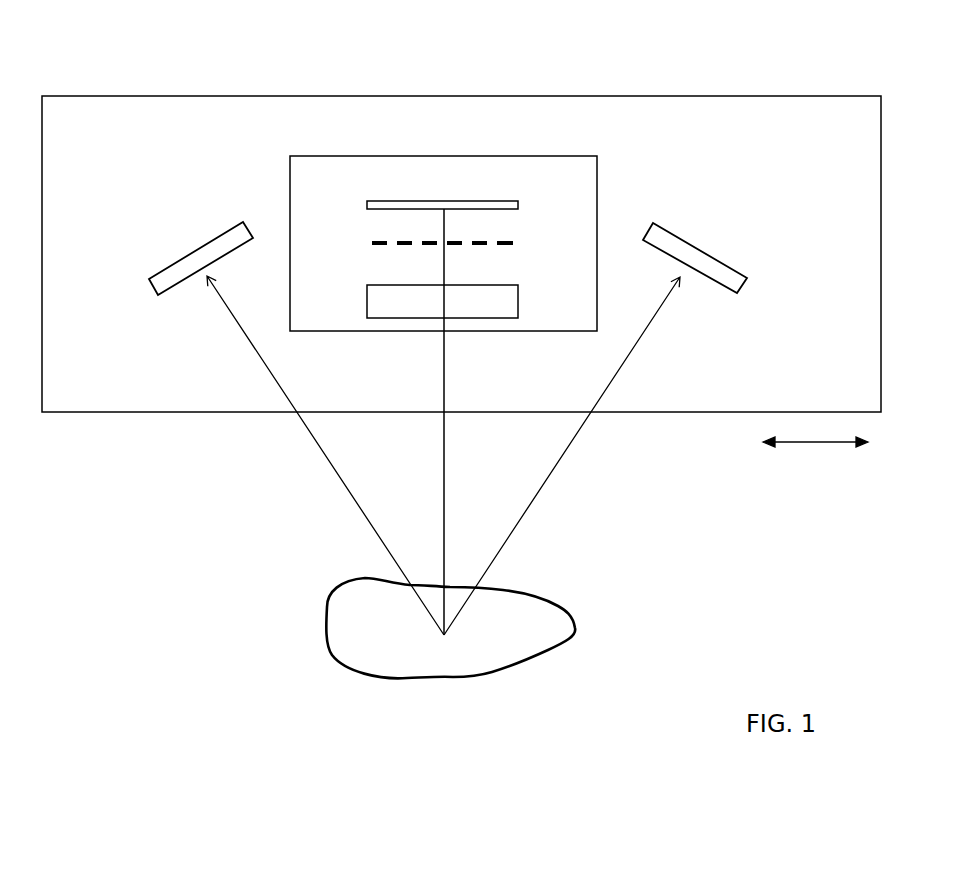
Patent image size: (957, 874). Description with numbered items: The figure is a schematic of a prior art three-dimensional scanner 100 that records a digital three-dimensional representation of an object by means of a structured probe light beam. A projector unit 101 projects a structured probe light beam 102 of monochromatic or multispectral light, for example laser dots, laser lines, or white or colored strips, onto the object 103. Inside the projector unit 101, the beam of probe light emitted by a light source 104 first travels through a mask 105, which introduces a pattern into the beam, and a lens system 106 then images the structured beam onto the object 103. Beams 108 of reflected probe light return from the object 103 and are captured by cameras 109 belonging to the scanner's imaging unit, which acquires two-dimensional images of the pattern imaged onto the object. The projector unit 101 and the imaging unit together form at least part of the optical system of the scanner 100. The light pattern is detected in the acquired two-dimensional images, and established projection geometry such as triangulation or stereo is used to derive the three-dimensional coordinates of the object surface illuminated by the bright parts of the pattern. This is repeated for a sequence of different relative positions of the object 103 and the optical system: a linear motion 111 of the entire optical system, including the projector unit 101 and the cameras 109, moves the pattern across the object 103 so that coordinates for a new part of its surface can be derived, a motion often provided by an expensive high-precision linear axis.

The 3D scanner 100 is at (461, 211).
The projector unit 101 is at (443, 230).
The structured probe light beam 102 is at (450, 472).
The object 103 is at (418, 628).
The light source 104 is at (432, 192).
The mask 105 is at (413, 244).
The lens system 106 is at (416, 301).
The beams of reflected probe light 108 is at (443, 455).
The cameras 109 is at (445, 252).
The linear motion 111 is at (815, 458).